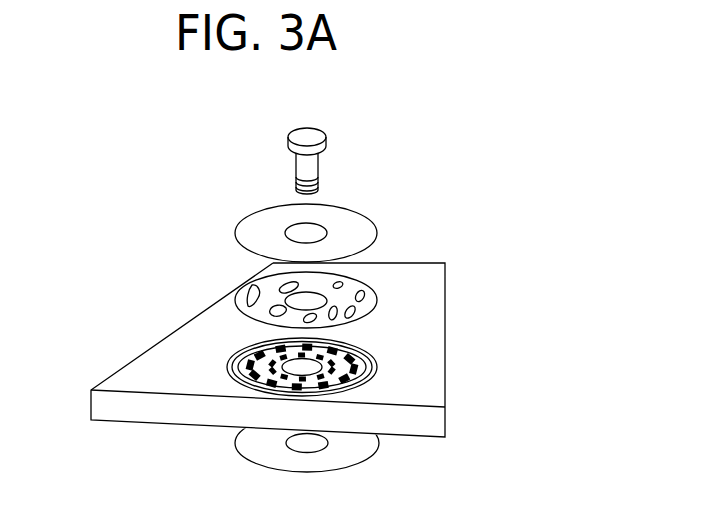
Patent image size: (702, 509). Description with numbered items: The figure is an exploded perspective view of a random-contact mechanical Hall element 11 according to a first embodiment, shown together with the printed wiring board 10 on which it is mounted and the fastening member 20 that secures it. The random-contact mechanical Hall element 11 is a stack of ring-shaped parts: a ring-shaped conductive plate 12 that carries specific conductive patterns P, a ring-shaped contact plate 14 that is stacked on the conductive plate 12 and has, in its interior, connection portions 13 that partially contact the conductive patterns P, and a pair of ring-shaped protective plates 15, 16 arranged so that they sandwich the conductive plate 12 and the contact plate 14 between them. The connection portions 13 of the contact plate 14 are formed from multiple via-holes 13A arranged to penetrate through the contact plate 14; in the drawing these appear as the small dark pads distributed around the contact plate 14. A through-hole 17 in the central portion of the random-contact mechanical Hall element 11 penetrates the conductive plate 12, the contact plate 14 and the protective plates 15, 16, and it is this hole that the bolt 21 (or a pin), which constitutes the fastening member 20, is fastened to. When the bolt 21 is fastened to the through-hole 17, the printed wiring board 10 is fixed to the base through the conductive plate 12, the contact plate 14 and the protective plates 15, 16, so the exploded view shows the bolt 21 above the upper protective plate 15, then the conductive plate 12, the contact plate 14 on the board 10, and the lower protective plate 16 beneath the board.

The printed wiring board 10 is at (437, 423).
The random-contact mechanical Hall element 11 is at (310, 319).
The ring-shaped conductive plate 12 is at (234, 300).
The connection portions 13 is at (410, 342).
The via-holes 13A is at (360, 366).
The ring-shaped contact plate 14 is at (341, 329).
The ring-shaped protective plate 15 is at (278, 214).
The ring-shaped protective plate 16 is at (235, 438).
The through-hole 17 is at (322, 234).
The fastening member 20 is at (310, 253).
The bolt 21 is at (318, 165).
The conductive patterns P is at (377, 290).